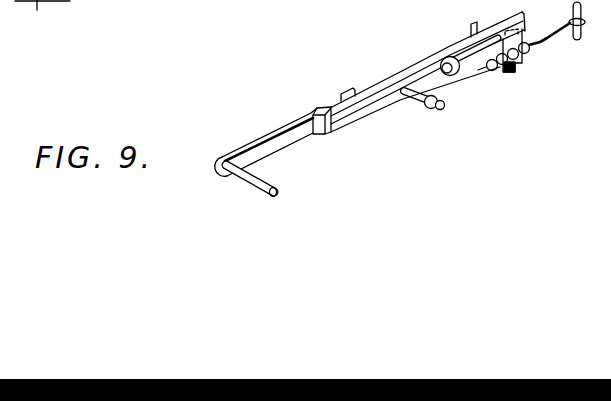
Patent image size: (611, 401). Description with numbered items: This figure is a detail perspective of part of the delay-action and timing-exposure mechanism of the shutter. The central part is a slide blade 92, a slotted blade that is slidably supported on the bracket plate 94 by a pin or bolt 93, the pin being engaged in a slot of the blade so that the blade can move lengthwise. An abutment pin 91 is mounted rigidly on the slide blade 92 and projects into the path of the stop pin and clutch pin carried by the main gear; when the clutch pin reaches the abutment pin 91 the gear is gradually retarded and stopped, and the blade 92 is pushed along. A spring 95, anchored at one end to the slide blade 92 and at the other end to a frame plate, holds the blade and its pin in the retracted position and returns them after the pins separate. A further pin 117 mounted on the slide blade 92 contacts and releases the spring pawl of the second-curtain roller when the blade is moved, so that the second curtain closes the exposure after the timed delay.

The abutment pin 91 is at (278, 198).
The slide blade 92 is at (282, 127).
The pin or bolt 93 is at (449, 57).
The bracket plate 94 is at (368, 83).
The spring 95 is at (465, 80).
The pin 117 is at (517, 68).